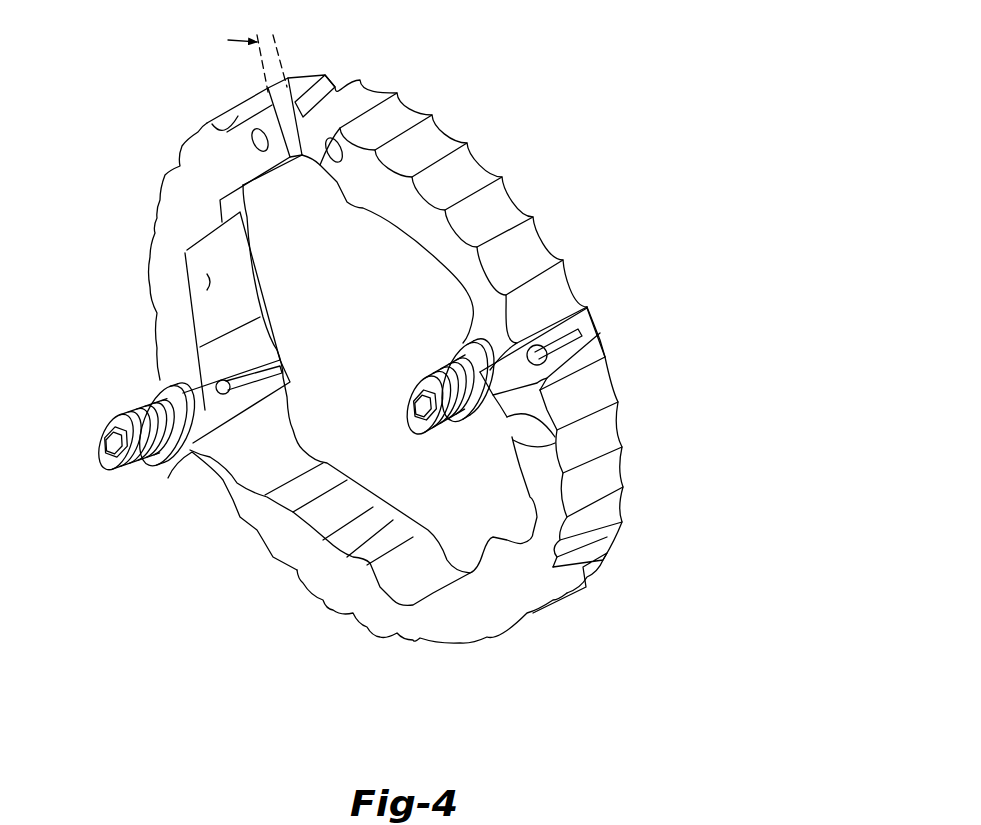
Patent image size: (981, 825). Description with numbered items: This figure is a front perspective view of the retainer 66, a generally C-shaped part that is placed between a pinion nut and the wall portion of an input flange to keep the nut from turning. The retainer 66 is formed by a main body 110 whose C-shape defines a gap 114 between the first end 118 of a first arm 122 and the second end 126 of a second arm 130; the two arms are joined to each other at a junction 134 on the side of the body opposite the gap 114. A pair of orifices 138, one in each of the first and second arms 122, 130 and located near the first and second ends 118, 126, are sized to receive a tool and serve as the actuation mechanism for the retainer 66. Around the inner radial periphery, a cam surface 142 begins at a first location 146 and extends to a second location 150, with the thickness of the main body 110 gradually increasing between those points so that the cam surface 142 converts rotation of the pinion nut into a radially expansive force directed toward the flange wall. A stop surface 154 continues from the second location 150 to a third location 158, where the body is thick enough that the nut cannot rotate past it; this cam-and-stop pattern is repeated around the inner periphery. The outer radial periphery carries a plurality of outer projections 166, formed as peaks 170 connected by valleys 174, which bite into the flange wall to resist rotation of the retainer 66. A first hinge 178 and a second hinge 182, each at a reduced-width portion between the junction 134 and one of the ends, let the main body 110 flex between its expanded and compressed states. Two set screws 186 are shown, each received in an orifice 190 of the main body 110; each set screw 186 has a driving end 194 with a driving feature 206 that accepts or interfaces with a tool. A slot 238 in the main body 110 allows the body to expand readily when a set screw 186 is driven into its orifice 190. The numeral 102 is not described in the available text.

The retainer 66 is at (627, 140).
The ring body 102 is at (333, 578).
The main body 110 is at (403, 623).
The gap 114 is at (279, 45).
The first end 118 is at (328, 80).
The first arm 122 is at (190, 175).
The second end 126 is at (372, 98).
The second arm 130 is at (403, 218).
The junction 134 is at (453, 650).
The orifices 138 is at (244, 138).
The cam surface 142 is at (207, 282).
The first location 146 is at (187, 240).
The second location 150 is at (197, 340).
The stop surface 154 is at (200, 360).
The third location 158 is at (207, 410).
The outer projections 166 is at (618, 400).
The peaks 170 is at (617, 528).
The valleys 174 is at (615, 510).
The first hinge 178 is at (230, 482).
The second hinge 182 is at (545, 522).
The set screw 186 is at (93, 450).
The orifice 190 is at (168, 468).
The driving end 194 is at (125, 466).
The driving feature 206 is at (93, 437).
The slot 238 is at (585, 328).